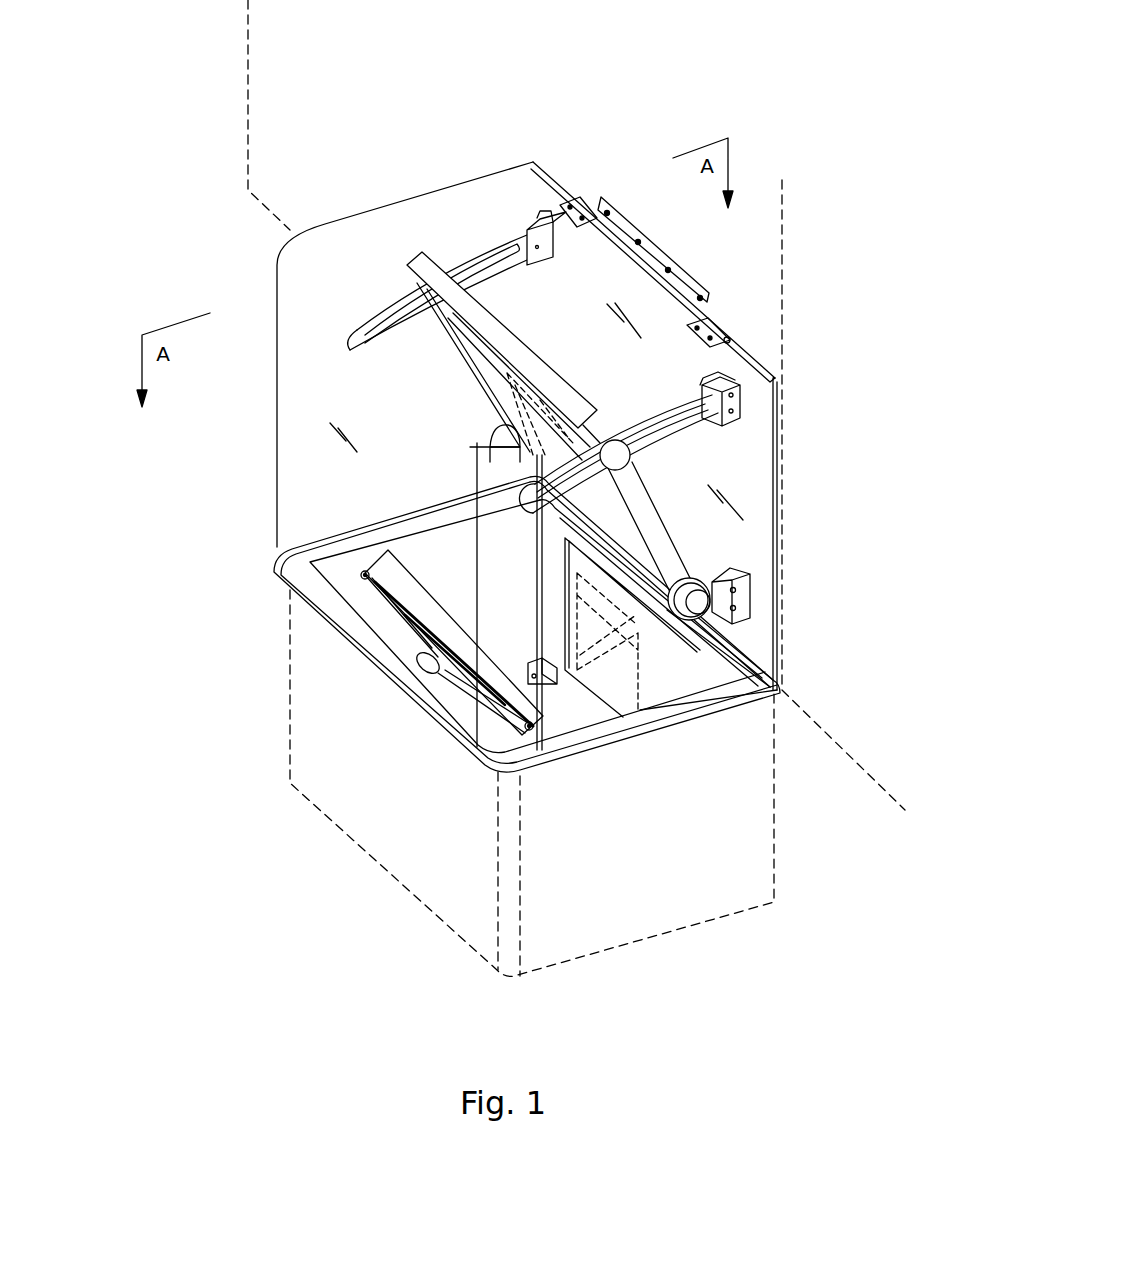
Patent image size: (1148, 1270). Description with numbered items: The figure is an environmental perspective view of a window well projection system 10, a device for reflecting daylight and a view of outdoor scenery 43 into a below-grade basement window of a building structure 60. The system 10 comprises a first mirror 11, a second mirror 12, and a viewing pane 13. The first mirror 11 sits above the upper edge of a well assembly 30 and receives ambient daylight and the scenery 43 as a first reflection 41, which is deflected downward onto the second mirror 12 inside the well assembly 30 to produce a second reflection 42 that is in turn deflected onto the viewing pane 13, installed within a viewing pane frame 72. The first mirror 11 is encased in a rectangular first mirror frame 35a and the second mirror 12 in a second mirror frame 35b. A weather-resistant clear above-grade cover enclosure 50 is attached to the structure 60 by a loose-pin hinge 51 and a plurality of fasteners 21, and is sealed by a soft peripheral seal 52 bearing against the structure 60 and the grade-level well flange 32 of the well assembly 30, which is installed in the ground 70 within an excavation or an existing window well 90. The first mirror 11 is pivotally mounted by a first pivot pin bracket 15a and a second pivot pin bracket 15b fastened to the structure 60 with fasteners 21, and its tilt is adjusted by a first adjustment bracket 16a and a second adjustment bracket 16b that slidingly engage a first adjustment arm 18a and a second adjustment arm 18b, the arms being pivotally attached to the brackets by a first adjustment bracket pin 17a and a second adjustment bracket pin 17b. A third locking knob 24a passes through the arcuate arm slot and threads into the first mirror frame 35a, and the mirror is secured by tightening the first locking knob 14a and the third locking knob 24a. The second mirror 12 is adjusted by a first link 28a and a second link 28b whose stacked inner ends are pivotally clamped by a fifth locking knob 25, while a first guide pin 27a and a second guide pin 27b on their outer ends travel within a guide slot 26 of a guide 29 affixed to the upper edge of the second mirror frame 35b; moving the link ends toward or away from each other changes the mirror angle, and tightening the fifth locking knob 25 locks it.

The window well projection system 10 is at (349, 128).
The first mirror 11 is at (477, 352).
The second mirror 12 is at (555, 727).
The viewing pane 13 is at (577, 560).
The first locking knob 14a is at (696, 592).
The first pivot pin bracket 15a is at (738, 573).
The second pivot pin bracket 15b is at (500, 447).
The first adjustment bracket 16a is at (727, 383).
The second adjustment bracket 16b is at (545, 213).
The first adjustment bracket pin 17a is at (705, 390).
The second adjustment bracket pin 17b is at (538, 250).
The first adjustment arm 18a is at (658, 412).
The second adjustment arm 18b is at (392, 302).
The fastener 21 is at (700, 298).
The third locking knob 24a is at (630, 455).
The fifth locking knob 25 is at (432, 658).
The guide slot 26 is at (415, 628).
The first guide pin 27a is at (532, 736).
The second guide pin 27b is at (363, 572).
The first link 28a is at (448, 680).
The second link 28b is at (393, 625).
The guide 29 is at (440, 672).
The well assembly 30 is at (290, 745).
The well flange 32 is at (668, 717).
The first mirror frame 35a is at (418, 262).
The second mirror frame 35b is at (393, 563).
The first reflection 41 is at (520, 405).
The second reflection 42 is at (597, 653).
The scenery 43 is at (140, 495).
The cover enclosure 50 is at (277, 358).
The hinge 51 is at (583, 200).
The seal 52 is at (547, 173).
The structure 60 is at (246, 92).
The ground 70 is at (802, 925).
The viewing pane frame 72 is at (718, 670).
The existing window well 90 is at (350, 837).